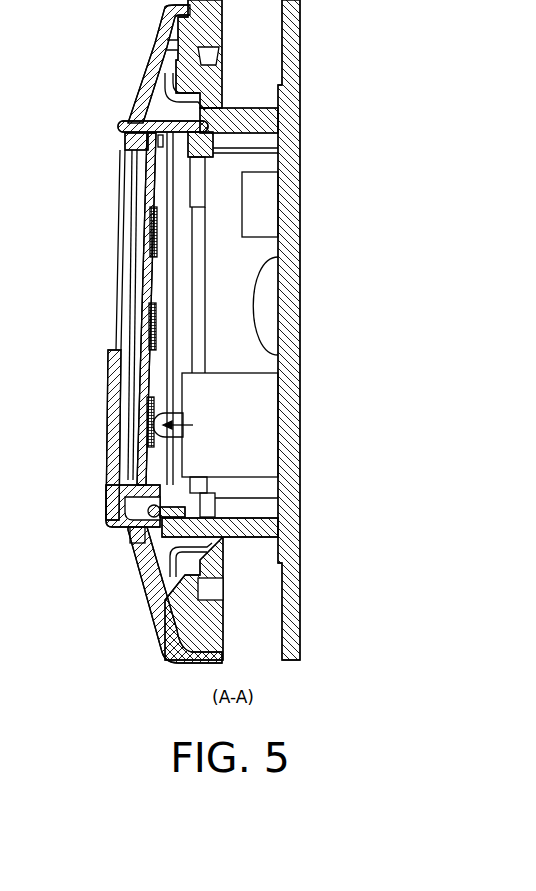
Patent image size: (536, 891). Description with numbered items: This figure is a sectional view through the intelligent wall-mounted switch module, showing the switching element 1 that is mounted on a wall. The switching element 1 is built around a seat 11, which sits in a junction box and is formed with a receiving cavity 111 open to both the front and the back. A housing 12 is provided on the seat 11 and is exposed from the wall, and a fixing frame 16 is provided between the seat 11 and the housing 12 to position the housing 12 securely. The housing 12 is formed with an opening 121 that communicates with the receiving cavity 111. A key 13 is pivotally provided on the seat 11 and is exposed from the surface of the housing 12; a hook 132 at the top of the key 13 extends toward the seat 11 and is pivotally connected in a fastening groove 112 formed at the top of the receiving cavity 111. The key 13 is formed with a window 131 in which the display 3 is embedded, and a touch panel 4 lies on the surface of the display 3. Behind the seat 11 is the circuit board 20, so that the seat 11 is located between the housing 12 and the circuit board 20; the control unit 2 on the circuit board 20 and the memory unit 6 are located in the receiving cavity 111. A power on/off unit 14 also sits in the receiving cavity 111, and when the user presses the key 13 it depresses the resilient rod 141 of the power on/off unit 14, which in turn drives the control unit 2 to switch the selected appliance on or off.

The switching element 1 is at (120, 582).
The control unit 2 is at (263, 307).
The display 3 is at (138, 202).
The touch panel 4 is at (123, 233).
The memory unit 6 is at (265, 205).
The seat 11 is at (257, 547).
The housing 12 is at (128, 552).
The key 13 is at (110, 438).
The power on/off unit 14 is at (263, 423).
The fixing frame 16 is at (168, 572).
The circuit board 20 is at (297, 237).
The receiving cavity 111 is at (240, 152).
The fastening groove 112 is at (212, 118).
The opening 121 is at (127, 122).
The window 131 is at (121, 165).
The hook 132 is at (283, 112).
The resilient rod 141 is at (175, 410).